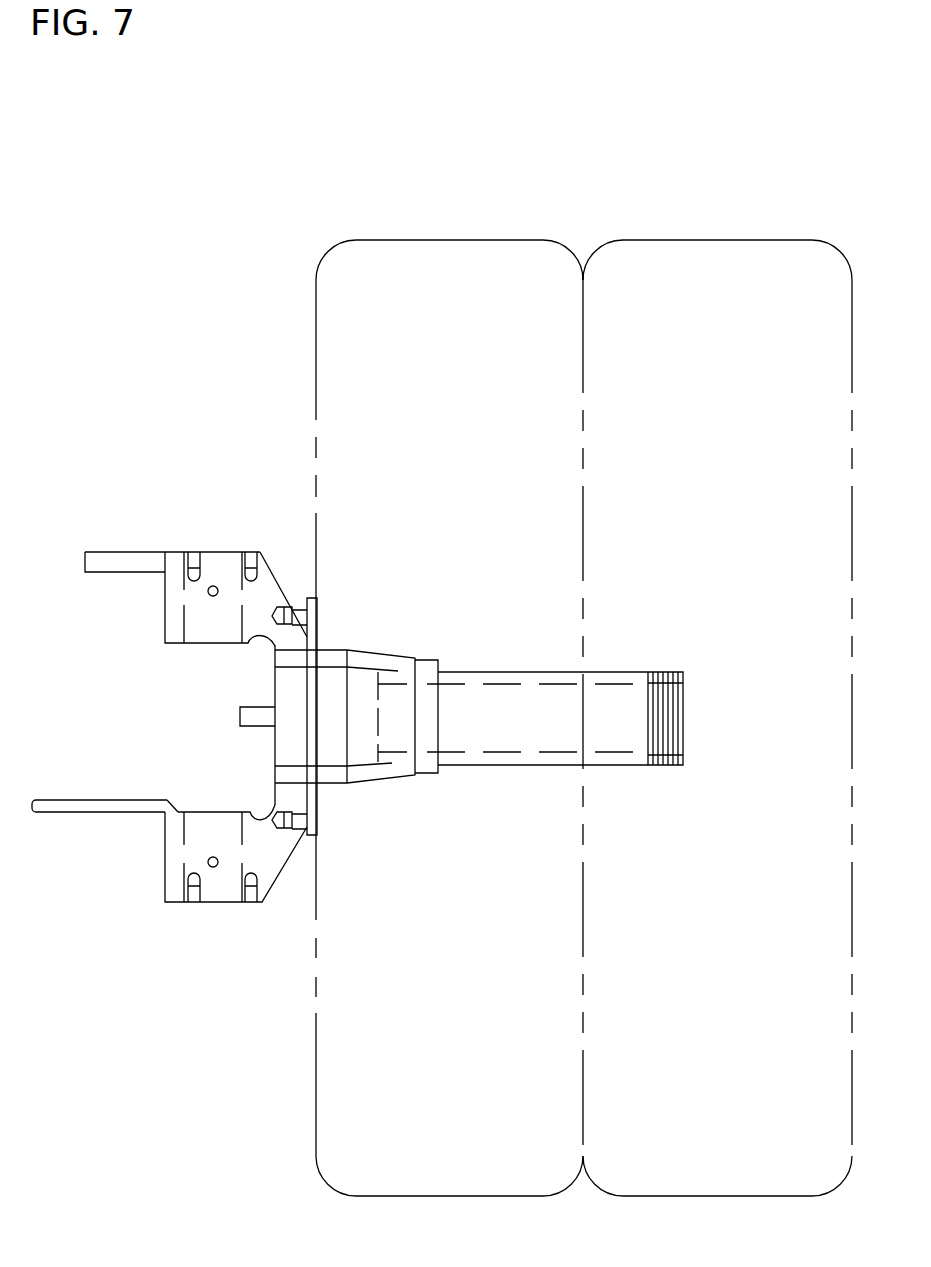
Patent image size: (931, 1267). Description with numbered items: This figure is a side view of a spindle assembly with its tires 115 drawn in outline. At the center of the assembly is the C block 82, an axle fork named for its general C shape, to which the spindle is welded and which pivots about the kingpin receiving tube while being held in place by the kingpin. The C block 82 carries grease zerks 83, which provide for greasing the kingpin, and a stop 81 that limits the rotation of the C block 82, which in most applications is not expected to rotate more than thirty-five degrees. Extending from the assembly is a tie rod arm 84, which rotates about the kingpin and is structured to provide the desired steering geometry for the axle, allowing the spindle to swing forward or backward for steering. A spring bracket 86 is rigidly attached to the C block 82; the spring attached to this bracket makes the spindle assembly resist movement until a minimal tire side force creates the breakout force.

The tires 115 is at (455, 240).
The tie rod arm 84 is at (112, 558).
The grease zerks 83 is at (212, 857).
The stop 81 is at (240, 707).
The spring bracket 86 is at (90, 805).
The C block 82 is at (221, 890).